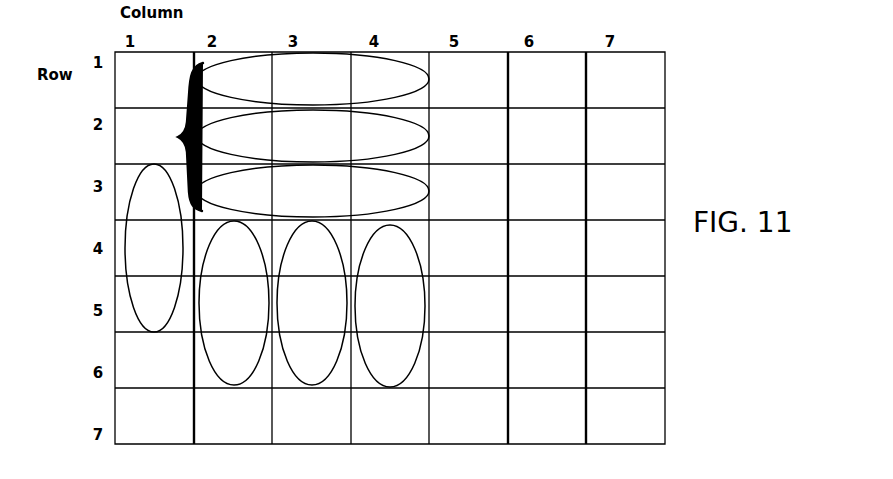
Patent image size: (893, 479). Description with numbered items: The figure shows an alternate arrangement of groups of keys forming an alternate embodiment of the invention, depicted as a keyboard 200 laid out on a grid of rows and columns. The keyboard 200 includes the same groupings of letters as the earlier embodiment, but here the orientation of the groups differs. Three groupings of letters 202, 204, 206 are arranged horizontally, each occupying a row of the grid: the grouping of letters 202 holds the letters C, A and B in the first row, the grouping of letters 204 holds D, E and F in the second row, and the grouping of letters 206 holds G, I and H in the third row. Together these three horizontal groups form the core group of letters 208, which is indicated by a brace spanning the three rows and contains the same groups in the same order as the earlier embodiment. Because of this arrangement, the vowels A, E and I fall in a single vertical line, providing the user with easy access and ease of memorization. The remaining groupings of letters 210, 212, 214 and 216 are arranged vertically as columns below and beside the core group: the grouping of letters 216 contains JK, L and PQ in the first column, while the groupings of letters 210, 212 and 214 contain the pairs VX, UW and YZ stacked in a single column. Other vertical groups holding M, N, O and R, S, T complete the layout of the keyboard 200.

The keyboard 200 is at (686, 138).
The grouping of letters 202 is at (415, 80).
The grouping of letters 204 is at (415, 136).
The grouping of letters 206 is at (415, 191).
The core group of letters 208 is at (178, 134).
The grouping of letters 210 is at (415, 248).
The grouping of letters 212 is at (410, 305).
The grouping of letters 214 is at (410, 365).
The grouping of letters 216 is at (147, 183).